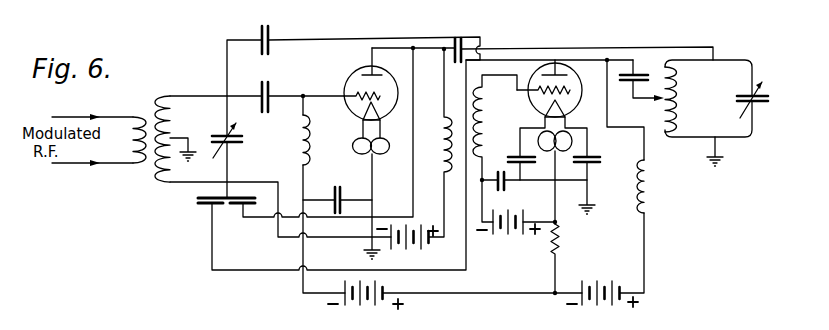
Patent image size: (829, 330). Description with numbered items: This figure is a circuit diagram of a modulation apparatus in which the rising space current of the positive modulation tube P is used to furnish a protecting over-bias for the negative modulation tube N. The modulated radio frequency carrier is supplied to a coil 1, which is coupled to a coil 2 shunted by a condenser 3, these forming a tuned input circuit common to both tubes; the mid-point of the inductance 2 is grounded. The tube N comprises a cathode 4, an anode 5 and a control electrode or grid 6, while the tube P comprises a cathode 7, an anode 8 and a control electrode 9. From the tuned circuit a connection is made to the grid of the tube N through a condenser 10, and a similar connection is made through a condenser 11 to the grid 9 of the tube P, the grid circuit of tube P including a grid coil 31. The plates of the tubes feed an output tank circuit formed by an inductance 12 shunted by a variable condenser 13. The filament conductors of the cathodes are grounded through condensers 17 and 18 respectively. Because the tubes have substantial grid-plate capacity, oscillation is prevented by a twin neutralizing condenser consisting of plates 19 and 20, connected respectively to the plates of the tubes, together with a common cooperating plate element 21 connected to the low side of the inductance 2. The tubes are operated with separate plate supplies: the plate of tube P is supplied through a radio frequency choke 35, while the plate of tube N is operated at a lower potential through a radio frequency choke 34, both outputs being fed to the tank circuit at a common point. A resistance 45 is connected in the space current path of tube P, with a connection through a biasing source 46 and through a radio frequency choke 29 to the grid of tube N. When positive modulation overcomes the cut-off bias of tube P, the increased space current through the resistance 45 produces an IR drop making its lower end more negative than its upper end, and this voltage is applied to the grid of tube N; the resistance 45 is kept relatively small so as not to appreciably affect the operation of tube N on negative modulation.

The coil 1 is at (133, 150).
The coil 2 is at (173, 110).
The condenser 3 is at (245, 143).
The cathode 4 is at (380, 107).
The anode 5 is at (373, 75).
The control electrode or grid 6 is at (382, 92).
The cathode 7 is at (565, 105).
The anode 8 is at (563, 70).
The control electrode 9 is at (567, 88).
The condenser 10 is at (272, 88).
The condenser 11 is at (274, 34).
The inductance 12 is at (680, 108).
The variable condenser 13 is at (760, 103).
The condenser 17 is at (511, 160).
The condenser 18 is at (600, 156).
The plate 19 is at (205, 206).
The plate 20 is at (248, 227).
The common cooperating plate element 21 is at (233, 197).
The radio frequency choke 29 is at (310, 140).
The grid coil 31 is at (495, 148).
The radio frequency choke 34 is at (442, 183).
The radio frequency choke 35 is at (647, 200).
The resistance 45 is at (585, 264).
The biasing source 46 is at (387, 288).
The negative modulation tube N is at (347, 77).
The positive modulation tube P is at (530, 107).